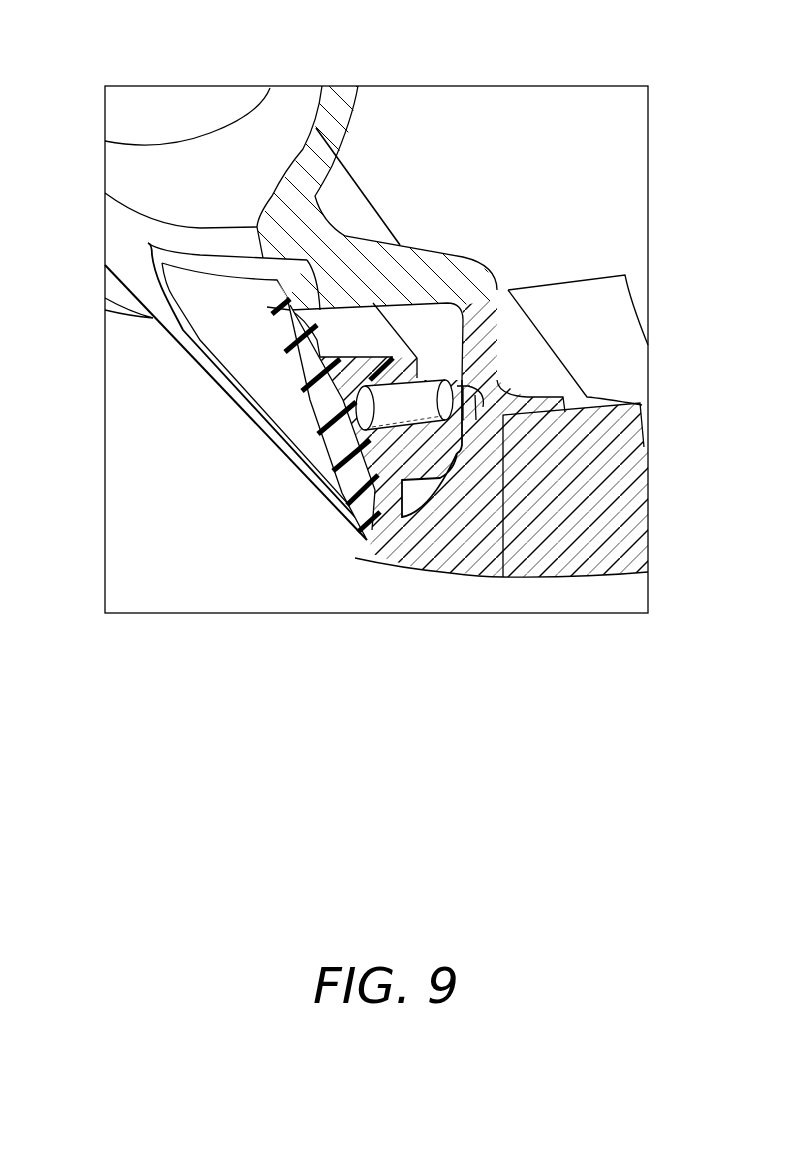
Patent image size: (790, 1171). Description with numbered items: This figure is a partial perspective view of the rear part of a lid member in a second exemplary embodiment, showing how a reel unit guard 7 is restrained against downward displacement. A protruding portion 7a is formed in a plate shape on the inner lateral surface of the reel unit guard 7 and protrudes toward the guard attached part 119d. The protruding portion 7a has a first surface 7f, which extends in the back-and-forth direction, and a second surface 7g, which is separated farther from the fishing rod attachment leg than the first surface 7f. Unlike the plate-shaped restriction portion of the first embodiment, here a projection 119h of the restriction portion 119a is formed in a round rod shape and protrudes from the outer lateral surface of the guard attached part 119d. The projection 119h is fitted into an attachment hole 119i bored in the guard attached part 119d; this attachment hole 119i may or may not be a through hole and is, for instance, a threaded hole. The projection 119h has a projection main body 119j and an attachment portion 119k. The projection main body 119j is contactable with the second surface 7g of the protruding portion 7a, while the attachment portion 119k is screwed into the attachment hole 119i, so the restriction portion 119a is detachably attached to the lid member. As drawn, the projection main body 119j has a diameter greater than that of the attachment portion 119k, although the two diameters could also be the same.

The reel unit guard 7 is at (270, 407).
The protruding portion 7a is at (365, 326).
The first surface 7f is at (378, 340).
The second surface 7g is at (337, 430).
The restriction portion 119a is at (376, 442).
The guard attached part 119d is at (438, 460).
The projection 119h is at (411, 443).
The attachment hole 119i is at (493, 383).
The projection main body 119j is at (423, 377).
The attachment portion 119k is at (463, 377).